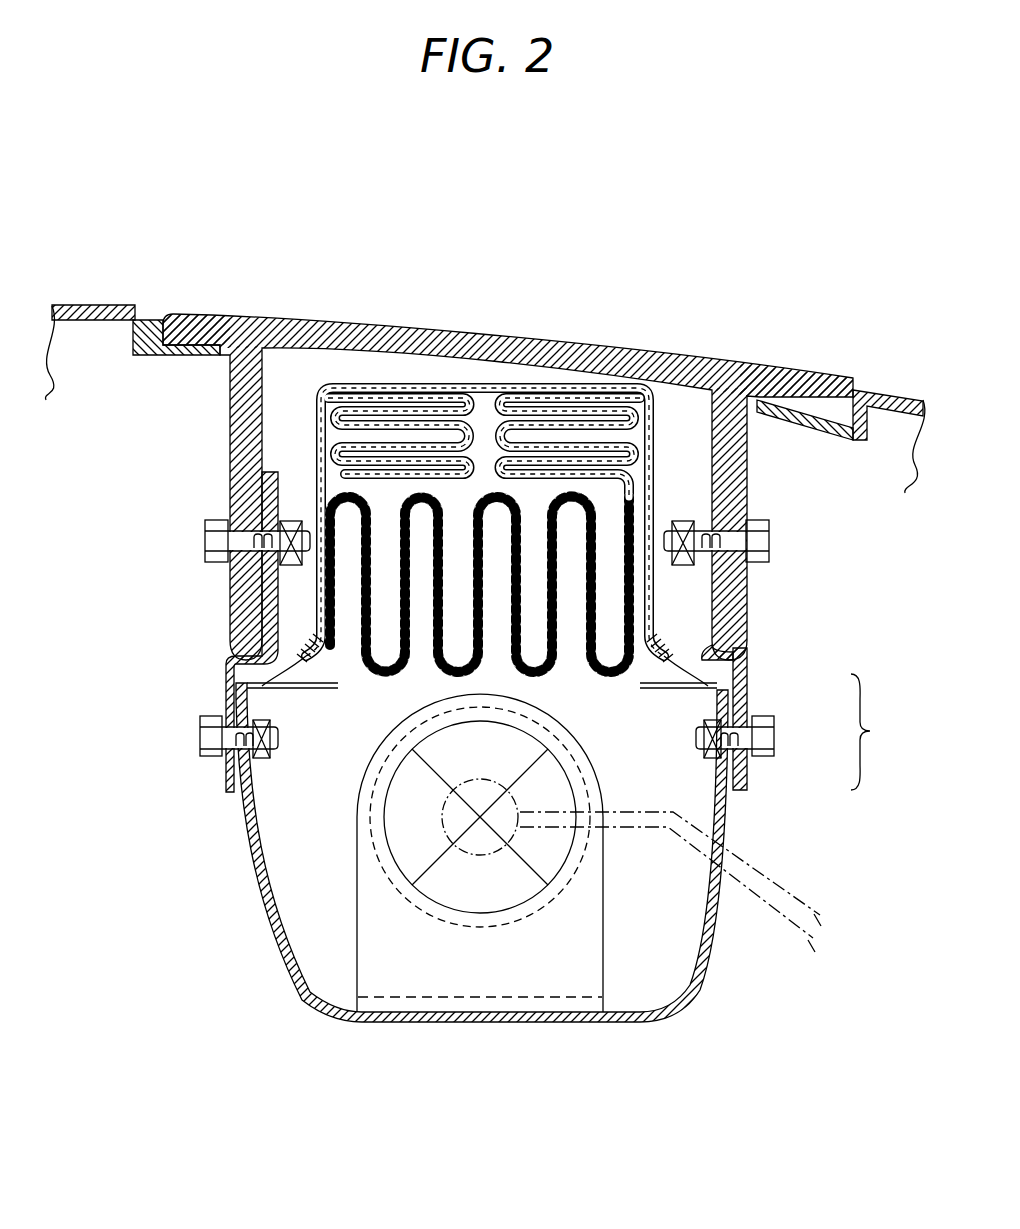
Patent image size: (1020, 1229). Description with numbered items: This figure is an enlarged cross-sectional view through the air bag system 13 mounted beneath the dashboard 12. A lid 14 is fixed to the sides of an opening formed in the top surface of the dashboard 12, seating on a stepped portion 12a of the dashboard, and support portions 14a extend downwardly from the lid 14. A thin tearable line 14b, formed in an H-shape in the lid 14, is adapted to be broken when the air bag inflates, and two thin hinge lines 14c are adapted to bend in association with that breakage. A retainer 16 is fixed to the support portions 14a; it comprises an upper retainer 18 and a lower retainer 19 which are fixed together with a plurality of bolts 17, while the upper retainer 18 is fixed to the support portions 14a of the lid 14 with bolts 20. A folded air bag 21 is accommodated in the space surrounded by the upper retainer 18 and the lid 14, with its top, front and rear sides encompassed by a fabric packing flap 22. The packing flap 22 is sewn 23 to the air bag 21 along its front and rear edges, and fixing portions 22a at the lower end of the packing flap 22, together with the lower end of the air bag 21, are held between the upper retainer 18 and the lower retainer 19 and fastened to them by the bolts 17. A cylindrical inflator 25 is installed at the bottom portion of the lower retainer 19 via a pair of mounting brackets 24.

The dashboard 12 is at (105, 306).
The stepped mounting portion of ceiling panel 12a is at (170, 313).
The air bag system 13 is at (216, 876).
The lid 14 is at (482, 445).
The support portions 14a is at (230, 601).
The tearable line 14b is at (487, 343).
The hinge lines 14c is at (280, 314).
The retainer 16 is at (803, 727).
The bolts 17 is at (200, 736).
The upper retainer 18 is at (750, 668).
The lower retainer 19 is at (735, 810).
The bolts 20 is at (208, 526).
The air bag 21 is at (481, 630).
The packing flap 22 is at (485, 512).
The fixing portions 22a is at (262, 686).
The sewn portions 23 is at (312, 652).
The mounting brackets 24 is at (600, 946).
The inflator 25 is at (402, 806).